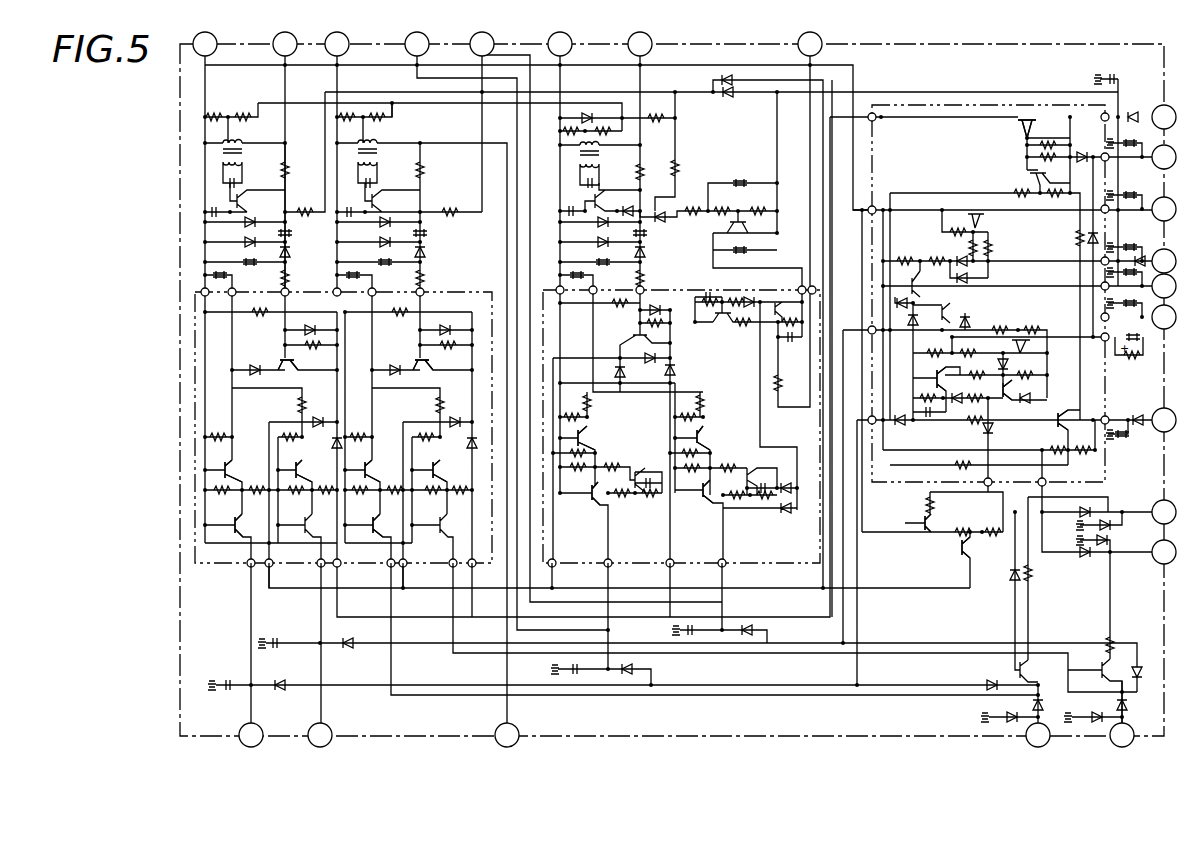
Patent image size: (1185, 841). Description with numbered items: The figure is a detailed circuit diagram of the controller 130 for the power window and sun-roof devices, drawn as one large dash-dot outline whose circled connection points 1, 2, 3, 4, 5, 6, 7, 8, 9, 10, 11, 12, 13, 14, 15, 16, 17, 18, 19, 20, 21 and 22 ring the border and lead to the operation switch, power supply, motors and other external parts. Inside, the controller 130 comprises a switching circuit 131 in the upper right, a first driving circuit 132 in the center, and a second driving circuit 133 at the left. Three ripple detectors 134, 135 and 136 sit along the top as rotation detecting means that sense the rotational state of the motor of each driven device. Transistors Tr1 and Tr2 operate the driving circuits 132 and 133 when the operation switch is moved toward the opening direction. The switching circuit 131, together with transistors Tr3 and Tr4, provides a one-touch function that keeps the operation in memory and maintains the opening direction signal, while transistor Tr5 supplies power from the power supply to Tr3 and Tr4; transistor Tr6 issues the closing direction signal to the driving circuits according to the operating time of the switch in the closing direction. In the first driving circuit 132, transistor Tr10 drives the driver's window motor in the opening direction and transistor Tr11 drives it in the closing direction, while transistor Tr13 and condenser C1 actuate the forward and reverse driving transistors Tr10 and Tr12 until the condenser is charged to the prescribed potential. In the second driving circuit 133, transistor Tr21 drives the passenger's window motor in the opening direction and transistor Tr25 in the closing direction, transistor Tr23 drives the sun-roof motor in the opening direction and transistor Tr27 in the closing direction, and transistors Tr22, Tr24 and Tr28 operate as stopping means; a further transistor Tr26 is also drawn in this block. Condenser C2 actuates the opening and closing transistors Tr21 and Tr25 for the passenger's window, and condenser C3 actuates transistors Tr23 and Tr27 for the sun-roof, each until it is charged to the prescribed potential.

The controller 130 is at (888, 44).
The switching circuit 131 is at (946, 101).
The first driving circuit 132 is at (793, 567).
The second driving circuit 133 is at (213, 567).
The ripple detector 134 is at (605, 155).
The ripple detector 135 is at (383, 153).
The ripple detector 136 is at (233, 153).
The condenser C1 is at (607, 272).
The condenser C2 is at (380, 272).
The condenser C3 is at (247, 272).
The transistor Tr1 is at (927, 533).
The transistor Tr2 is at (972, 556).
The transistor Tr3 is at (1003, 398).
The transistor Tr4 is at (940, 392).
The transistor Tr5 is at (1075, 420).
The transistor Tr6 is at (1018, 124).
The transistor Tr10 is at (590, 504).
The transistor Tr11 is at (595, 430).
The transistor Tr12 is at (705, 504).
The transistor Tr13 is at (712, 442).
The transistor Tr21 is at (376, 536).
The transistor Tr22 is at (378, 458).
The transistor Tr23 is at (238, 536).
The transistor Tr24 is at (238, 458).
The transistor Tr25 is at (442, 536).
The transistor Tr26 is at (448, 375).
The transistor Tr27 is at (308, 536).
The transistor Tr28 is at (310, 375).
The terminal 1 is at (1164, 117).
The terminal 2 is at (1164, 157).
The terminal 3 is at (1164, 209).
The terminal 4 is at (1164, 261).
The terminal 5 is at (1164, 286).
The terminal 6 is at (1164, 317).
The terminal 7 is at (1164, 420).
The terminal 8 is at (1164, 512).
The terminal 9 is at (1164, 552).
The terminal 10 is at (1122, 735).
The terminal 11 is at (1038, 735).
The terminal 12 is at (507, 735).
The terminal 13 is at (320, 735).
The terminal 14 is at (251, 735).
The terminal 15 is at (205, 44).
The terminal 16 is at (285, 44).
The terminal 17 is at (337, 44).
The terminal 18 is at (417, 44).
The terminal 19 is at (482, 44).
The terminal 20 is at (560, 44).
The terminal 21 is at (640, 44).
The terminal 22 is at (810, 44).